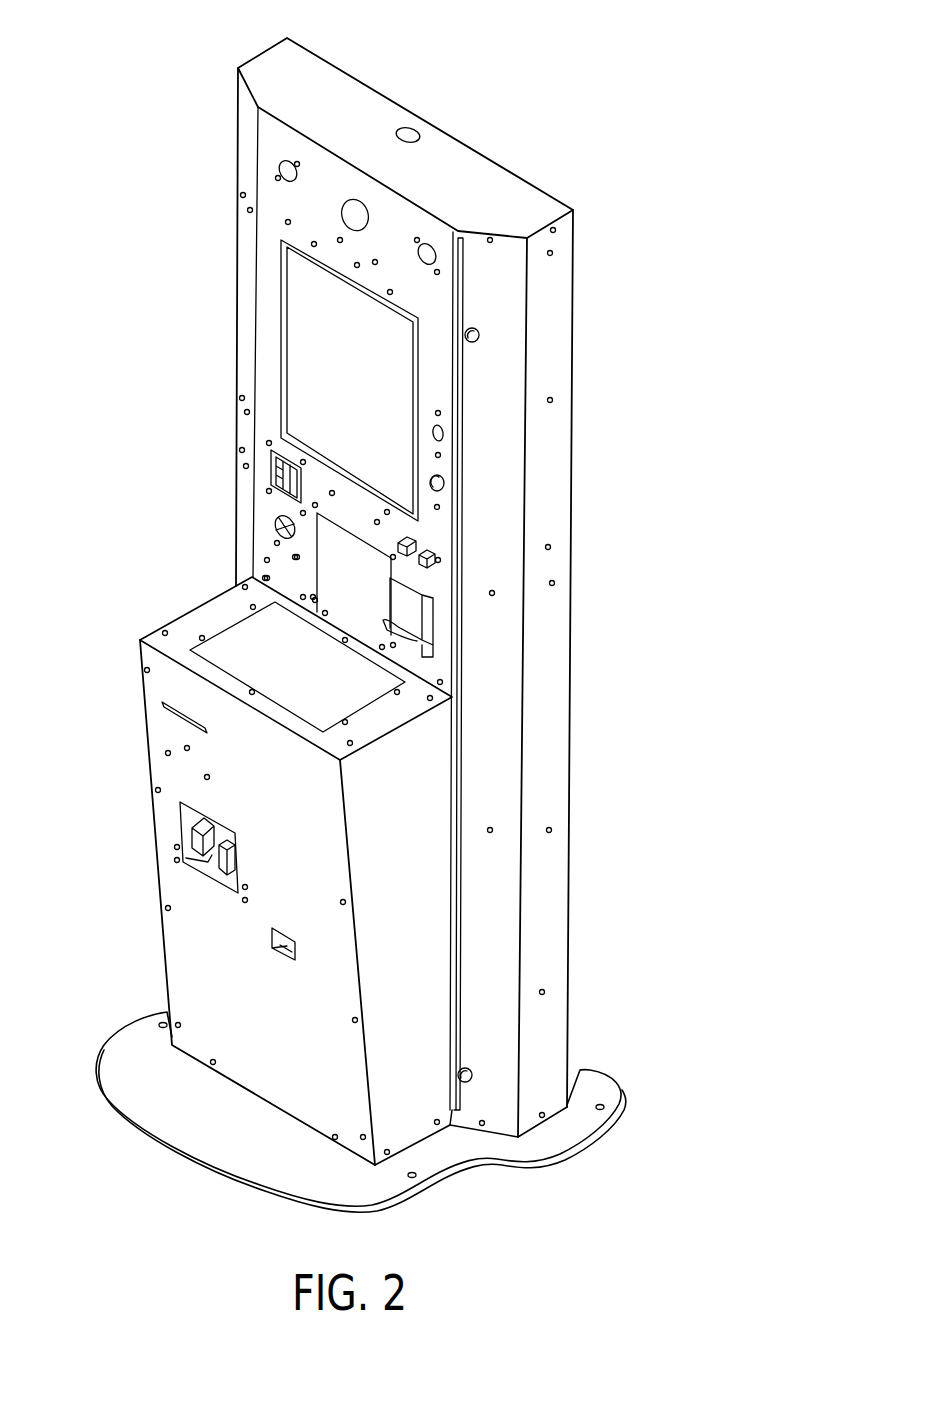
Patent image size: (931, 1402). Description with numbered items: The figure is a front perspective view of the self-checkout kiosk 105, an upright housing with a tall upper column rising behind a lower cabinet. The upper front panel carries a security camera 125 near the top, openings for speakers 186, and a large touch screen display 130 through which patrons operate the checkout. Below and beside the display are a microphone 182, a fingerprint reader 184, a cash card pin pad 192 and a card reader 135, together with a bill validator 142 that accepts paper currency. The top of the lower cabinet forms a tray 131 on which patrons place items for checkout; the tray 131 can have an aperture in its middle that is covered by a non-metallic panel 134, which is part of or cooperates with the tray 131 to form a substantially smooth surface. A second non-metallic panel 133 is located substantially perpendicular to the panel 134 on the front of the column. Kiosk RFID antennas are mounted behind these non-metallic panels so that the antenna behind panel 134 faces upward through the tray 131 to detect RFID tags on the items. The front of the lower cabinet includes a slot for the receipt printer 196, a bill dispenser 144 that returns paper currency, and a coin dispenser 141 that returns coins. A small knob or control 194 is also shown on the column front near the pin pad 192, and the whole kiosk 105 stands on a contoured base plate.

The kiosk 105 is at (424, 83).
The speakers 186 is at (294, 165).
The security camera 125 is at (352, 214).
The touch screen display 130 is at (400, 316).
The microphone 182 is at (441, 433).
The fingerprint reader 184 is at (442, 483).
The cash card pin pad 192 is at (272, 464).
The control knob 194 is at (276, 519).
The non-metallic panel 133 is at (313, 549).
The card reader 135 is at (416, 542).
The bill validator 142 is at (437, 636).
The tray 131 is at (140, 637).
The non-metallic panel 134 is at (227, 628).
The receipt printer 196 is at (170, 710).
The bill dispenser 144 is at (208, 861).
The coin dispenser 141 is at (278, 951).